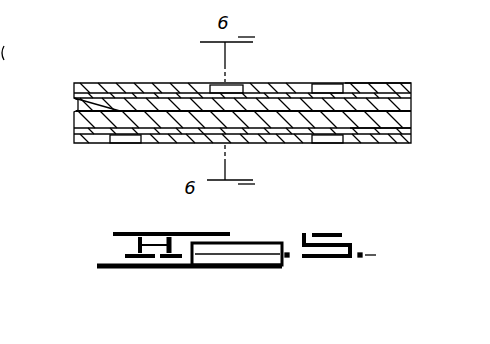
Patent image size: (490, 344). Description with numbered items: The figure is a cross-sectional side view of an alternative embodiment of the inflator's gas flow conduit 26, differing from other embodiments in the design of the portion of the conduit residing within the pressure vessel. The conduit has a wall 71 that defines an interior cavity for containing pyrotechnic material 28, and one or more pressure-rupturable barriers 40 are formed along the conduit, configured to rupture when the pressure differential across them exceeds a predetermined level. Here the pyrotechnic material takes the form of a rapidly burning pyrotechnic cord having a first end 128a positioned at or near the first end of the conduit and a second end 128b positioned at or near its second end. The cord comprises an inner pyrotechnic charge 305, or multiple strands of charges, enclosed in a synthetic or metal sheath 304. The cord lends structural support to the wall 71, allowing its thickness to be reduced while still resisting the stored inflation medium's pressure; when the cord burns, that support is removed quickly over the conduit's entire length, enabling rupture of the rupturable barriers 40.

The gas flow conduit 26 is at (147, 145).
The pyrotechnic material 28 is at (375, 84).
The rupturable barrier 40 is at (217, 86).
The wall 71 is at (292, 85).
The first end of pyrotechnic cord 128a is at (78, 114).
The second end of pyrotechnic cord 128b is at (399, 112).
The sheath 304 is at (365, 128).
The inner pyrotechnic charge 305 is at (387, 114).